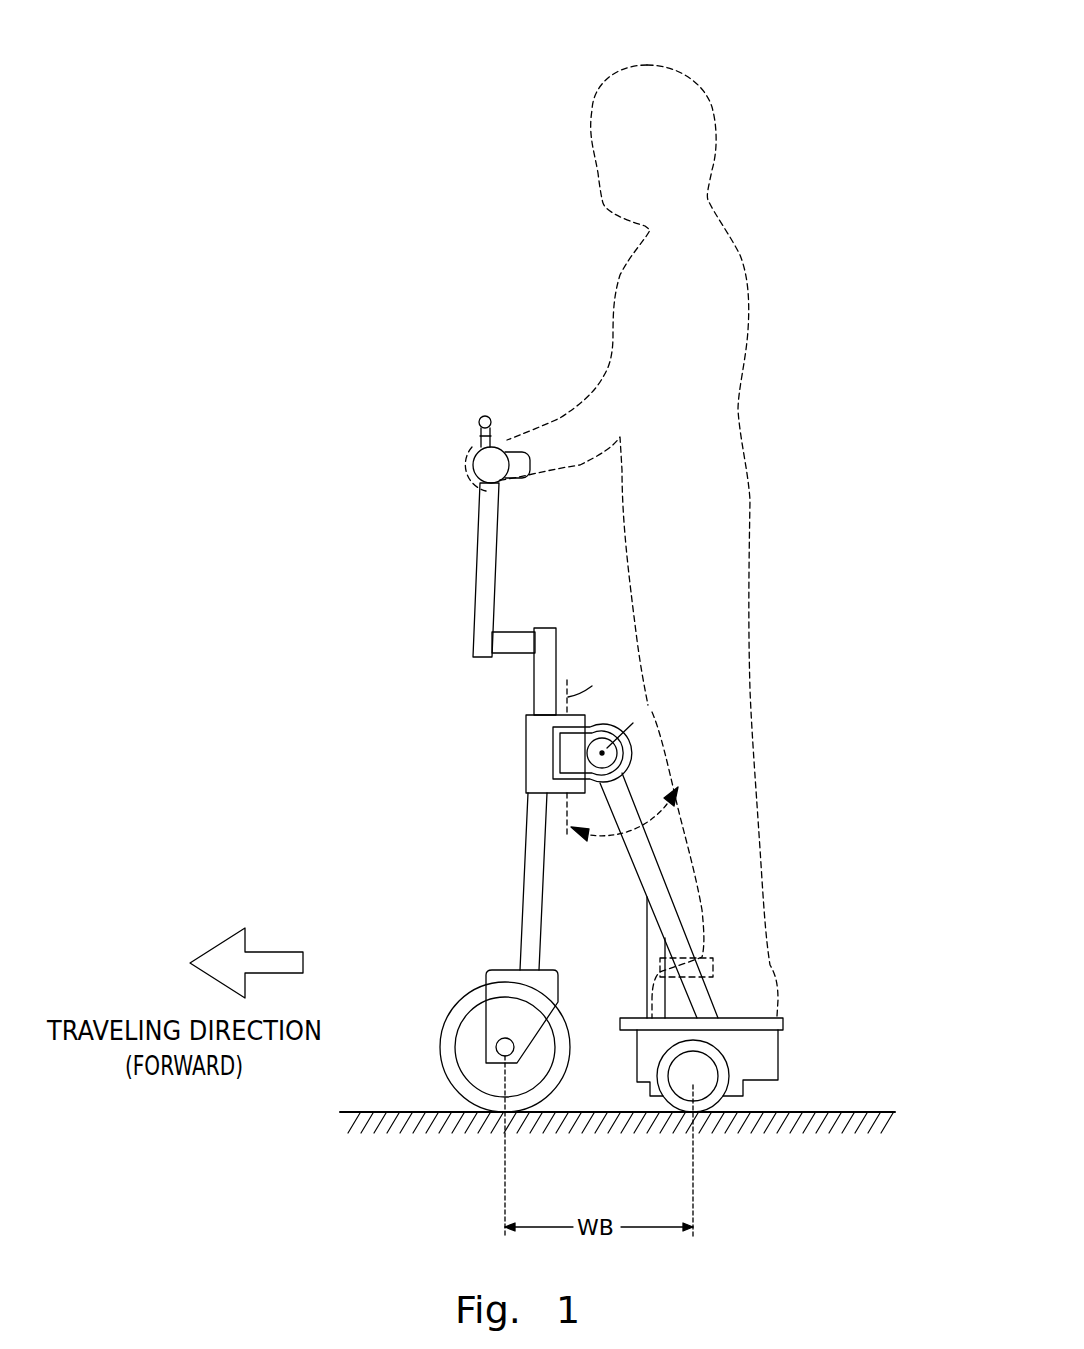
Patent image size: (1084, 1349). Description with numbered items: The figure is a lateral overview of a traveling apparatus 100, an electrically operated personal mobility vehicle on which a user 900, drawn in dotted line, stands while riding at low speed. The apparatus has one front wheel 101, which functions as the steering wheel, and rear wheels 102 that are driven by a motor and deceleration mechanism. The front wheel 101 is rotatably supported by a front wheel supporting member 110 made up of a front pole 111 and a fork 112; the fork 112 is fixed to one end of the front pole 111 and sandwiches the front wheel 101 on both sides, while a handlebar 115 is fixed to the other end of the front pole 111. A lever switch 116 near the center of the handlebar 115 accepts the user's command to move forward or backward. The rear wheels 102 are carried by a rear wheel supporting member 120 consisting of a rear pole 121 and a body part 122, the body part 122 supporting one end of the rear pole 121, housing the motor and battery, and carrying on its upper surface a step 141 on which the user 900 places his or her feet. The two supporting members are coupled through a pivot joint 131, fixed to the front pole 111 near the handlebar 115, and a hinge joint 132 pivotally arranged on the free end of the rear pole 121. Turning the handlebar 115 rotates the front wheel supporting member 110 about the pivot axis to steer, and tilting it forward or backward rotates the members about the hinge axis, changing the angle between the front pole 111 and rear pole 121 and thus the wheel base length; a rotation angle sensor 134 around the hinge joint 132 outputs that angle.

The traveling apparatus 100 is at (312, 411).
The user 900 is at (755, 78).
The front wheel 101 is at (470, 1037).
The rear wheels 102 is at (713, 1083).
The front wheel supporting member 110 is at (410, 870).
The front pole 111 is at (528, 896).
The fork 112 is at (507, 980).
The handlebar 115 is at (487, 462).
The lever switch 116 is at (488, 414).
The rear wheel supporting member 120 is at (880, 962).
The rear pole 121 is at (690, 957).
The body part 122 is at (760, 1047).
The pivot joint 131 is at (540, 738).
The hinge joint 132 is at (580, 756).
The rotation angle sensor 134 is at (618, 755).
The step 141 is at (632, 1017).